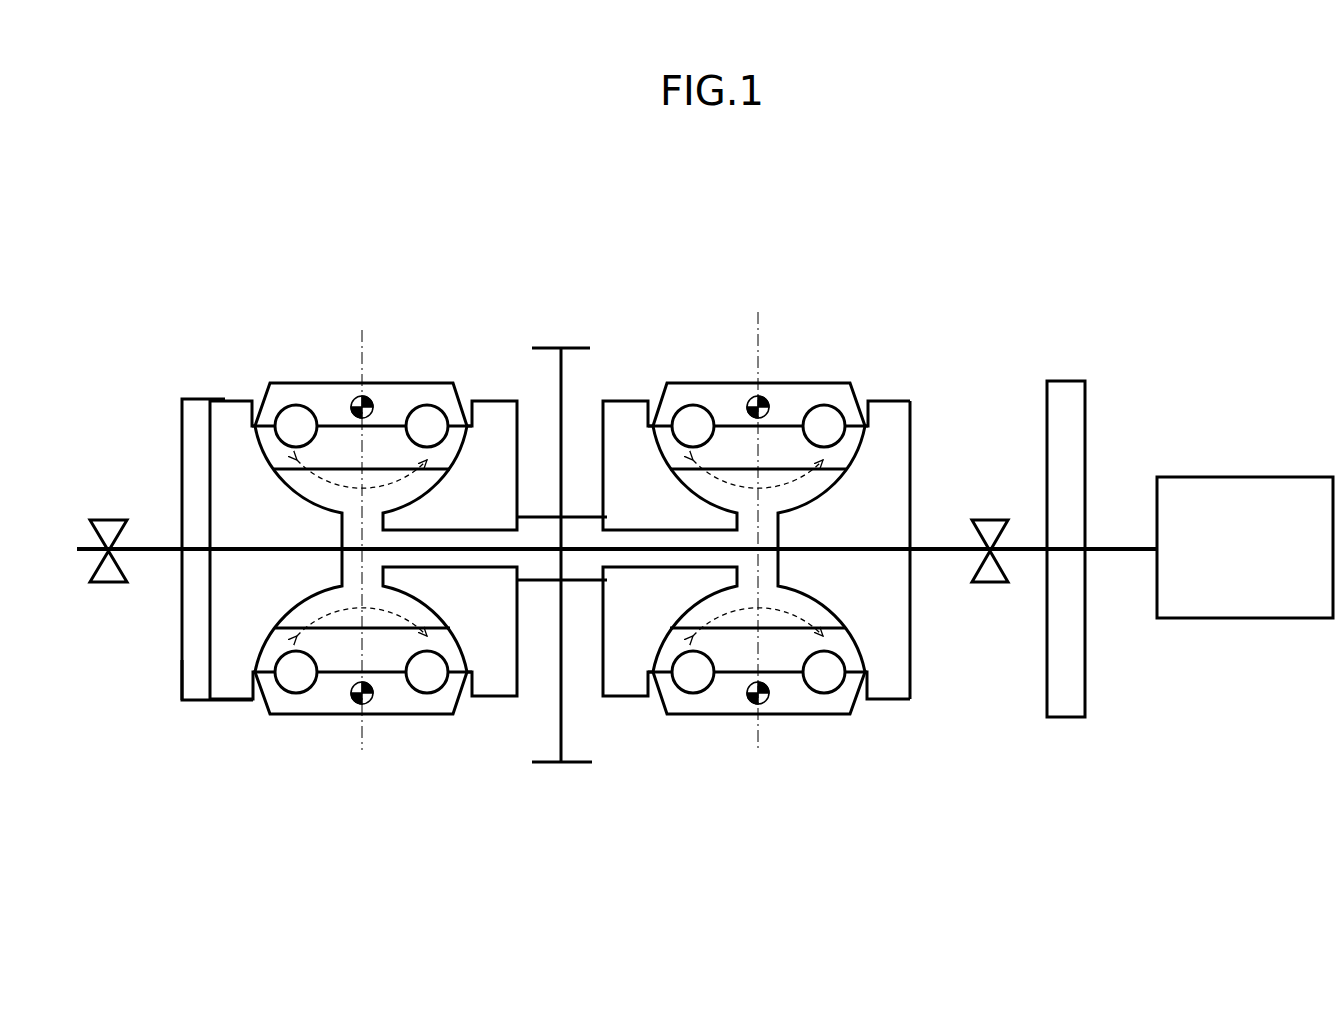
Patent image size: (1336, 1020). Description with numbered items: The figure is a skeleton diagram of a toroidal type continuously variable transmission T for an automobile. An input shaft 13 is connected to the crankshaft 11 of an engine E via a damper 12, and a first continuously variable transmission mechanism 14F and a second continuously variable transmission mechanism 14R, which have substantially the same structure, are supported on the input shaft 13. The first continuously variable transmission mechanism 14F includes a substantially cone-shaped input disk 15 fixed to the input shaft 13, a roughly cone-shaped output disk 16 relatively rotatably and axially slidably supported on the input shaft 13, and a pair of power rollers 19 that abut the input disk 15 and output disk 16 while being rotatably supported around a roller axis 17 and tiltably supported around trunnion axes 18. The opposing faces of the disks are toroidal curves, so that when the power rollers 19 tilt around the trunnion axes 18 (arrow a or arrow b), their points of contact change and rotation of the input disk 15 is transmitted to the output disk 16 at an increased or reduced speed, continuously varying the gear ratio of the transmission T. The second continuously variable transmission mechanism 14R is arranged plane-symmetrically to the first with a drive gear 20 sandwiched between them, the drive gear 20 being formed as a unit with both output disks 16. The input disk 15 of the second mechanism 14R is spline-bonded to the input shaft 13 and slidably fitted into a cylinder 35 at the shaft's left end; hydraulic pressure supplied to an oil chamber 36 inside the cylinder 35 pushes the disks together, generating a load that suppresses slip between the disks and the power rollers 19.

The crankshaft 11 is at (1110, 546).
The damper 12 is at (1073, 380).
The input shaft 13 is at (872, 540).
The second continuously variable transmission mechanism 14R is at (400, 355).
The first continuously variable transmission mechanism 14F is at (813, 355).
The input disk 15 is at (233, 425).
The output disk 16 is at (502, 412).
The roller axis 17 is at (352, 335).
The trunnion axis 18 is at (355, 400).
The power roller 19 is at (452, 452).
The drive gear 20 is at (540, 348).
The cylinder 35 is at (183, 668).
The oil chamber 36 is at (199, 456).
The toroidal type continuously variable transmission T is at (625, 293).
The engine E is at (1236, 562).